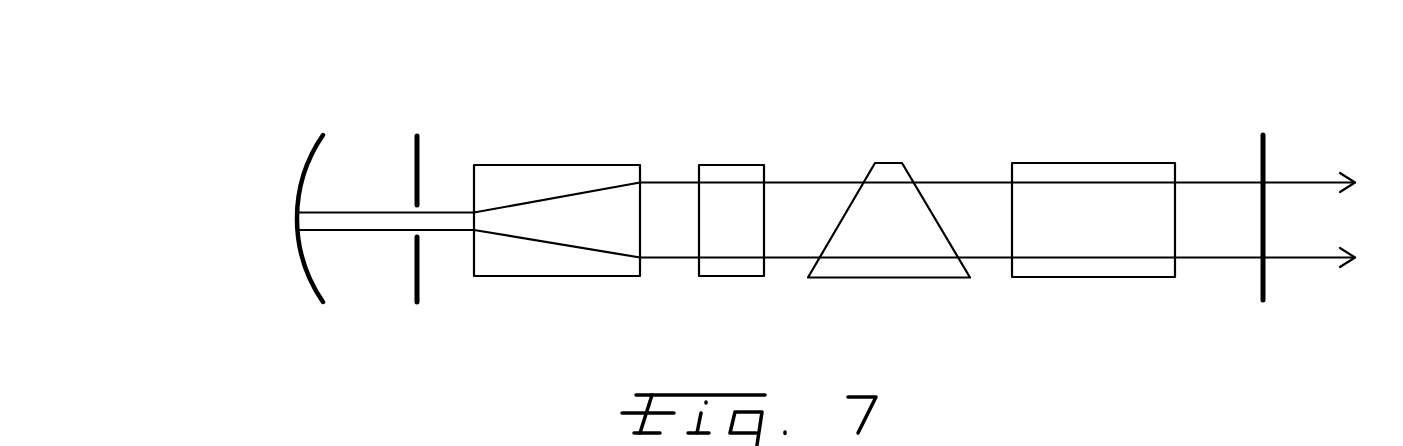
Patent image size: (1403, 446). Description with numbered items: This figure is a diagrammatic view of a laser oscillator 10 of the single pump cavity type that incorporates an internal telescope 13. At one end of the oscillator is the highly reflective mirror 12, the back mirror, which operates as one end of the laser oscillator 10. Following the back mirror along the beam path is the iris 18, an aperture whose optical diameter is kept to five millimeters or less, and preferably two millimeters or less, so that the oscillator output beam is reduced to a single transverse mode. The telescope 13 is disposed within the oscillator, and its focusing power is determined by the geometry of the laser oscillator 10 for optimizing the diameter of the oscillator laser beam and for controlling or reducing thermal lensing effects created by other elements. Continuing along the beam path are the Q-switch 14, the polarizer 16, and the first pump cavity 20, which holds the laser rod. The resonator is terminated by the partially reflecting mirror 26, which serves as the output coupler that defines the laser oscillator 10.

The laser oscillator 10 is at (266, 162).
The highly reflective mirror 12 is at (312, 153).
The internal telescope 13 is at (573, 165).
The Q-switch 14 is at (764, 163).
The polarizer 16 is at (888, 162).
The iris 18 is at (419, 157).
The first pump cavity 20 is at (1087, 163).
The partially reflecting mirror 26 is at (1266, 157).